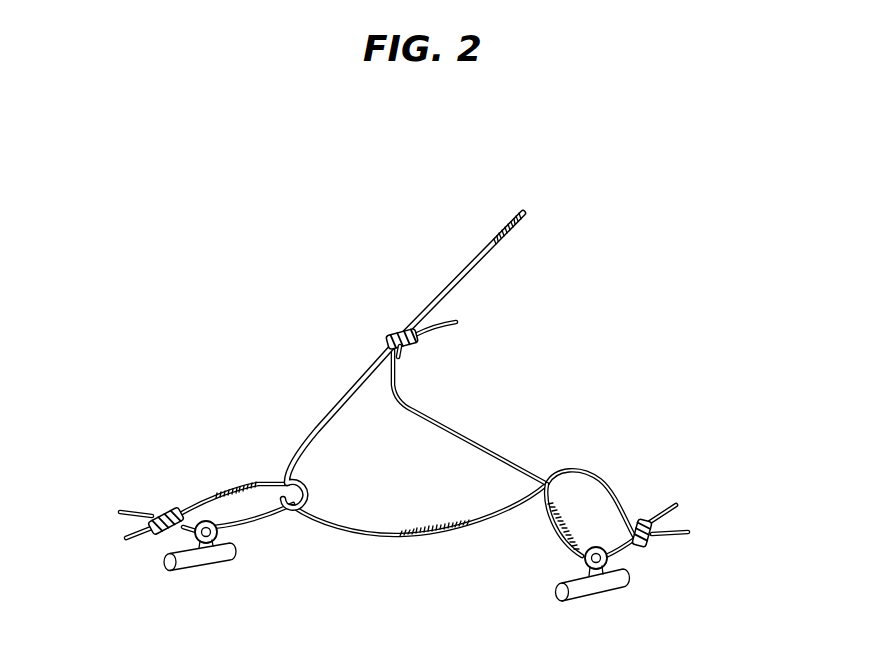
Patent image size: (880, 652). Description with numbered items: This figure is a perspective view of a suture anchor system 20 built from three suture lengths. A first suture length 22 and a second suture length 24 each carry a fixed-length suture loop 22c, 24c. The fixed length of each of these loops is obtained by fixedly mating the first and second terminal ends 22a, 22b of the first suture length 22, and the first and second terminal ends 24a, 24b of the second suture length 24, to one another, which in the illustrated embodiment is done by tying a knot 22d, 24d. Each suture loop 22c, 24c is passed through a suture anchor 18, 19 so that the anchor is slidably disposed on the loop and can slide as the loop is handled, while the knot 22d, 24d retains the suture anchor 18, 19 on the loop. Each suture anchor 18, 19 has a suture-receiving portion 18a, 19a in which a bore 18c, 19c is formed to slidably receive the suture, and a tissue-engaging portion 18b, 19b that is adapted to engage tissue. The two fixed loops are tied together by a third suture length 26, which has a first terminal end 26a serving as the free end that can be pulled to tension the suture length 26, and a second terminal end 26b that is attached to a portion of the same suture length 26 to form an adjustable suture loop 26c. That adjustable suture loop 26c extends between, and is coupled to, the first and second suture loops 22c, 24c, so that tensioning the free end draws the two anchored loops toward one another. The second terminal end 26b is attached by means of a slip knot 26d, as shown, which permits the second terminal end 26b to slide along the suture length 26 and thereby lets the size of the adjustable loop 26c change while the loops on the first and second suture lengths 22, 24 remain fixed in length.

The suture anchor 18 is at (199, 576).
The suture-receiving portion 18a is at (173, 533).
The tissue-engaging portion 18b is at (232, 570).
The bore 18c is at (230, 542).
The suture anchor 19 is at (587, 594).
The suture-receiving portion 19a is at (633, 563).
The tissue-engaging portion 19b is at (623, 603).
The bore 19c is at (580, 570).
The suture anchor system 20 is at (275, 218).
The first suture length 22 is at (187, 494).
The first terminal end 22a is at (133, 516).
The second terminal end 22b is at (132, 538).
The fixed-length suture loop 22c is at (263, 473).
The knot 22d is at (161, 514).
The second suture length 24 is at (532, 464).
The first terminal end 24a is at (677, 507).
The second terminal end 24b is at (690, 533).
The fixed-length suture loop 24c is at (587, 460).
The knot 24d is at (653, 543).
The third suture length 26 is at (412, 335).
The first terminal end 26a is at (505, 213).
The second terminal end 26b is at (457, 323).
The adjustable suture loop 26c is at (365, 340).
The slip knot 26d is at (417, 350).